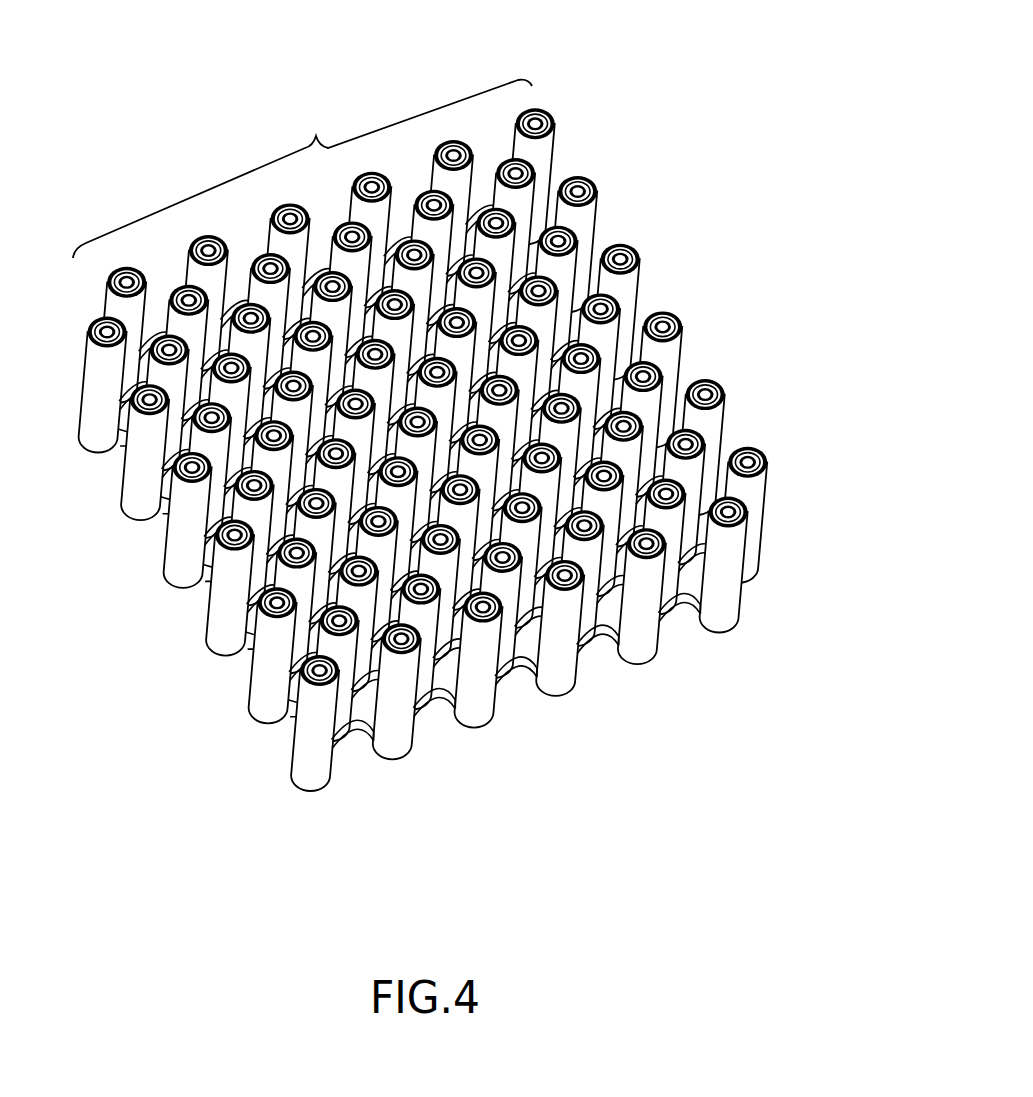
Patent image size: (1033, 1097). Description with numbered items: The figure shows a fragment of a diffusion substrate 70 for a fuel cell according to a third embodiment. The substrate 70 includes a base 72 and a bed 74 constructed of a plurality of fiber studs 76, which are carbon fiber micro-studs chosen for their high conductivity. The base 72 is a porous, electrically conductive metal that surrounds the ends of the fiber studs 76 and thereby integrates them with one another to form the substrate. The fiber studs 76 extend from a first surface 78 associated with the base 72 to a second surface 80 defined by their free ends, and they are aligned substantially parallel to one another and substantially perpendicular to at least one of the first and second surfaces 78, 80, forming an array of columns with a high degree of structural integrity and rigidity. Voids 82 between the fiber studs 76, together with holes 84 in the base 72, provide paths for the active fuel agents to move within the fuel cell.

The diffusion substrate 70 is at (480, 440).
The base 72 is at (532, 718).
The bed 74 is at (302, 169).
The fiber studs 76 is at (762, 511).
The first surface 78 is at (689, 585).
The second surface 80 is at (470, 449).
The voids 82 is at (328, 573).
The holes 84 is at (433, 710).